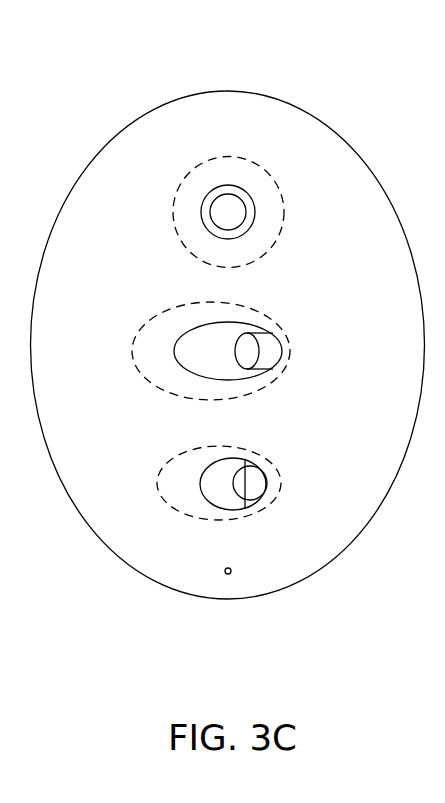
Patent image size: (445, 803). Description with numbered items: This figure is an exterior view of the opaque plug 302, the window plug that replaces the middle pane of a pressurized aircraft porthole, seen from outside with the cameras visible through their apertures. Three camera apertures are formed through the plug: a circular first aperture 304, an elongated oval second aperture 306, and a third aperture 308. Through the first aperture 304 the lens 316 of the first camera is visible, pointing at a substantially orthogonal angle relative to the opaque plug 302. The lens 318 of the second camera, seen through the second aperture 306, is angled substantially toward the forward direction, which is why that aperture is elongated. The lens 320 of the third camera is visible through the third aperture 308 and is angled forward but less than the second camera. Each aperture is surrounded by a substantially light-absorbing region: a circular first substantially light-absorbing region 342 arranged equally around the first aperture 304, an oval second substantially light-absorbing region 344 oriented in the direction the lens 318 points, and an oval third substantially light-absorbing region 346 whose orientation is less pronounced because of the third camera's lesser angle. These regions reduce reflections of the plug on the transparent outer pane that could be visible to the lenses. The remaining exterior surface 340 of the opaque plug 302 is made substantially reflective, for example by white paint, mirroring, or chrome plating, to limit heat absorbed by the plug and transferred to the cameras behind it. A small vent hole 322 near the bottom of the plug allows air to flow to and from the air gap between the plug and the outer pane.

The opaque plug 302 is at (228, 110).
The first aperture 304 is at (245, 190).
The second aperture 306 is at (288, 345).
The third aperture 308 is at (253, 463).
The lens 316 is at (245, 222).
The lens 318 is at (267, 358).
The lens 320 is at (267, 483).
The vent hole 322 is at (231, 574).
The exterior surface 340 is at (351, 295).
The first substantially light-absorbing region 342 is at (178, 207).
The second substantially light-absorbing region 344 is at (150, 327).
The third substantially light-absorbing region 346 is at (167, 480).